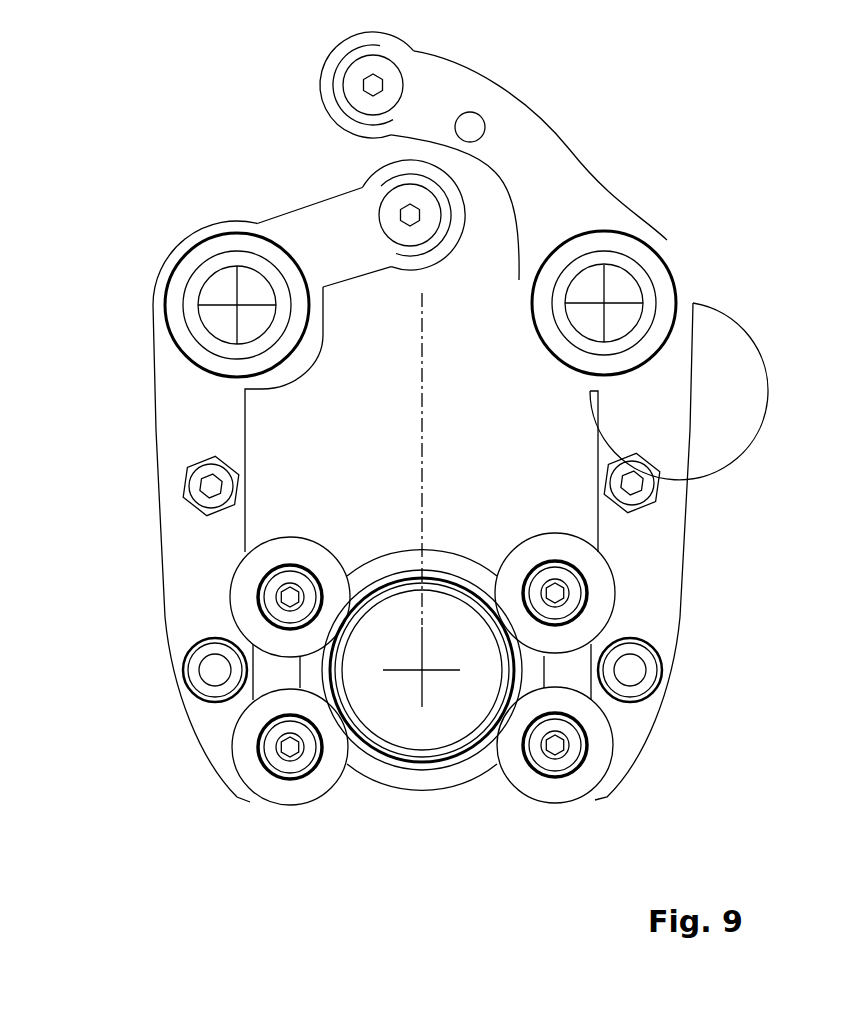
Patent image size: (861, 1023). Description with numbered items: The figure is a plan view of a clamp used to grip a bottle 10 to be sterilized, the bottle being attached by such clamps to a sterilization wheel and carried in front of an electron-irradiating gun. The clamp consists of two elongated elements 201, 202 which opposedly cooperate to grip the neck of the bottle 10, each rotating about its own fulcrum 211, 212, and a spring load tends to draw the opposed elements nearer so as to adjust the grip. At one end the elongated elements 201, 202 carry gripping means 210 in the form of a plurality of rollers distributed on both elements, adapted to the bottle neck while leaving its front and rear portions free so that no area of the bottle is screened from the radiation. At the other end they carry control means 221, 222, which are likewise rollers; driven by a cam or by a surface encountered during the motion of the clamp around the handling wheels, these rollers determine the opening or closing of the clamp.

The bottle 10 is at (427, 728).
The elongated element 201 is at (178, 423).
The elongated element 202 is at (667, 420).
The gripping means 210 is at (240, 736).
The fulcrum 211 is at (210, 289).
The fulcrum 212 is at (623, 287).
The control means 221 is at (378, 195).
The control means 222 is at (352, 52).